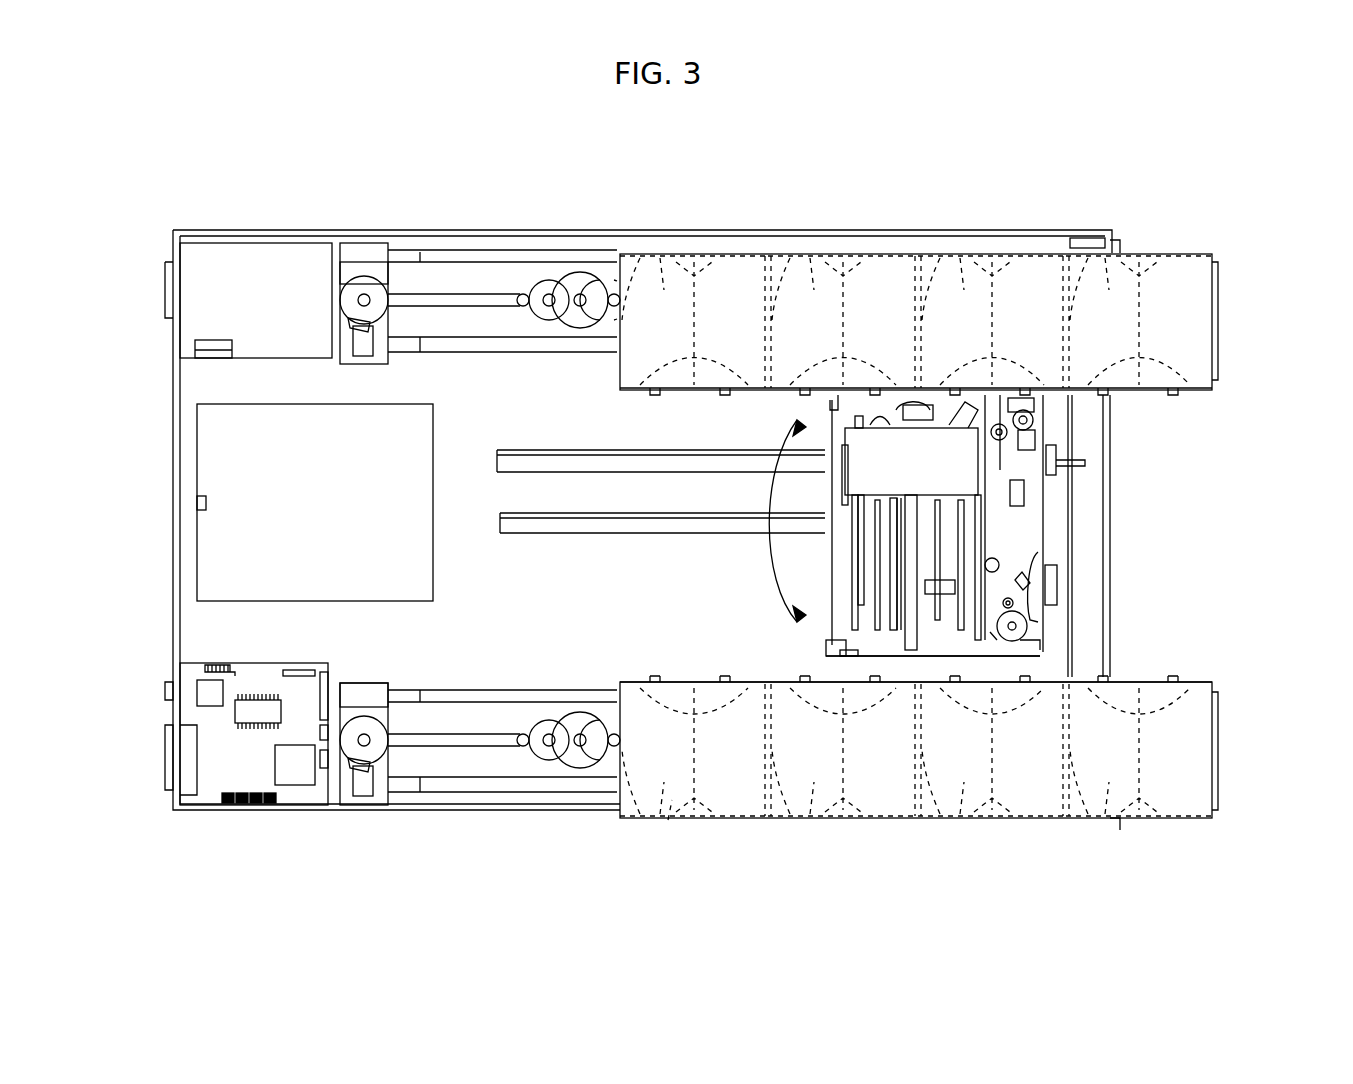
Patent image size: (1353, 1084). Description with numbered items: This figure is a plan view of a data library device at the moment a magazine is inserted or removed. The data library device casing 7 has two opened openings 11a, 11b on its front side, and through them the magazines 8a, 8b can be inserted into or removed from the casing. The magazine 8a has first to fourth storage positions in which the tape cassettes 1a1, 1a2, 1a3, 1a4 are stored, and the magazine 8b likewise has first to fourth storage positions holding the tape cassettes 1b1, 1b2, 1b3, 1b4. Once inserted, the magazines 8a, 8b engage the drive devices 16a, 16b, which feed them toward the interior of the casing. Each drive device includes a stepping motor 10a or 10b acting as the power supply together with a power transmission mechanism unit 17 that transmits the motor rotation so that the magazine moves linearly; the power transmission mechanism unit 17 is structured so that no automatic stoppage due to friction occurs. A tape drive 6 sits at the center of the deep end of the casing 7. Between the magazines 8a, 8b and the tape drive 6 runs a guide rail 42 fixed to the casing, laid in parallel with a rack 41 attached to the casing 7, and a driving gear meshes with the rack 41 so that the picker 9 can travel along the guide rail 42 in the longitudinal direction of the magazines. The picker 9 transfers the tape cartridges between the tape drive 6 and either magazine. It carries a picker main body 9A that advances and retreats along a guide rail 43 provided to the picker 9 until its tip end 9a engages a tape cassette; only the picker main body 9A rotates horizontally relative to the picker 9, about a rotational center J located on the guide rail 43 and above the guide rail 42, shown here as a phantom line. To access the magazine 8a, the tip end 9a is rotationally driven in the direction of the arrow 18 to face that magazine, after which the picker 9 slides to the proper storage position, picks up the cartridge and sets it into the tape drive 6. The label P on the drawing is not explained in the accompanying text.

The data library device casing 7 is at (293, 832).
The stepping motor 10a is at (372, 282).
The stepping motor 10b is at (378, 808).
The drive device 16a is at (505, 278).
The drive device 16b is at (468, 814).
The power transmission mechanism unit 17 is at (582, 292).
The tape cassette 1a4 is at (665, 285).
The tape cassette 1a3 is at (820, 285).
The tape cassette 1a2 is at (960, 285).
The tape cassette 1a1 is at (1092, 290).
The tape cassette 1b4 is at (686, 780).
The tape cassette 1b3 is at (815, 780).
The tape cassette 1b2 is at (952, 780).
The tape cassette 1b1 is at (1086, 780).
The opening 11a is at (1118, 250).
The opening 11b is at (1118, 816).
The magazine 8a is at (1220, 338).
The magazine 8b is at (1220, 762).
The tape drive 6 is at (220, 546).
The rack 41 is at (563, 468).
The guide rail 42 is at (596, 525).
The arrow 18 is at (770, 576).
The picker 9 is at (1048, 560).
The picker main body 9A is at (955, 472).
The tip end 9a is at (880, 654).
The guide rail 43 is at (912, 598).
The rotational center J is at (910, 524).
The recording medium path P is at (1112, 622).